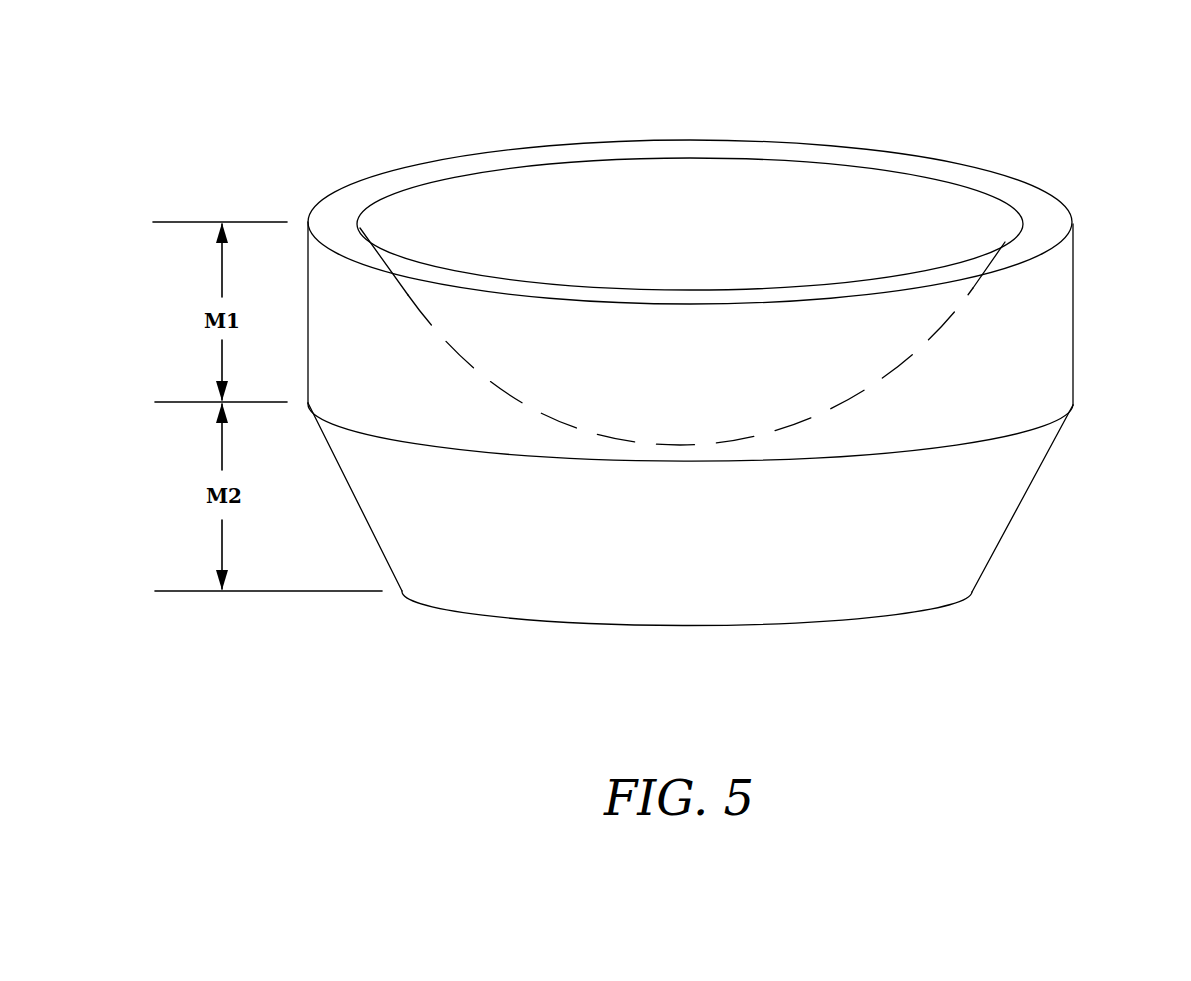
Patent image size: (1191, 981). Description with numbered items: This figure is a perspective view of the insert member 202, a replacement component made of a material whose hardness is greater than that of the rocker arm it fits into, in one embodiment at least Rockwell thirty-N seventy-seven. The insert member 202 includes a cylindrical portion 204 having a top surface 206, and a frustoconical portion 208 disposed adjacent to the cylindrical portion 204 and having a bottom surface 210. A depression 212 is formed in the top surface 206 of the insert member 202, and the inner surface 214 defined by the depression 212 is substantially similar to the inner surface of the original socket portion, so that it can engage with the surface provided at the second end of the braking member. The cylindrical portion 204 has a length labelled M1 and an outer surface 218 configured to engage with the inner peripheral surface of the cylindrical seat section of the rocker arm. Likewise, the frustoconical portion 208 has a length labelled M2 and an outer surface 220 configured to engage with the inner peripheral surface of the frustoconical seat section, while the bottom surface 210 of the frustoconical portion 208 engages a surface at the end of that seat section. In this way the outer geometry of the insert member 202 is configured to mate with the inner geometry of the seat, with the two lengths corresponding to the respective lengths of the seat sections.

The insert member 202 is at (983, 107).
The cylindrical portion 204 is at (1073, 310).
The top surface 206 is at (1046, 220).
The frustoconical portion 208 is at (1032, 483).
The bottom surface 210 is at (910, 612).
The depression 212 is at (582, 163).
The inner surface 214 is at (942, 330).
The outer surface 218 is at (307, 313).
The outer surface 220 is at (362, 506).